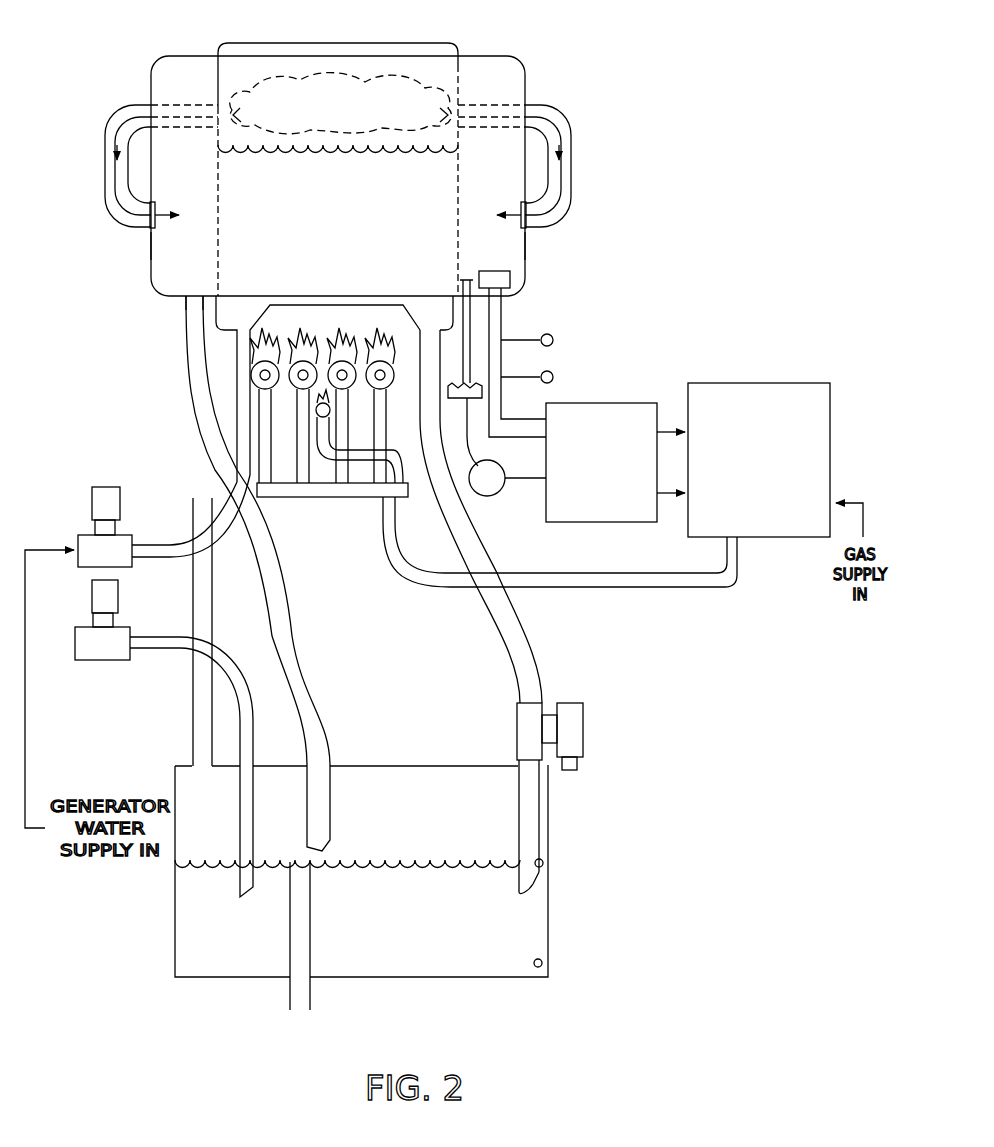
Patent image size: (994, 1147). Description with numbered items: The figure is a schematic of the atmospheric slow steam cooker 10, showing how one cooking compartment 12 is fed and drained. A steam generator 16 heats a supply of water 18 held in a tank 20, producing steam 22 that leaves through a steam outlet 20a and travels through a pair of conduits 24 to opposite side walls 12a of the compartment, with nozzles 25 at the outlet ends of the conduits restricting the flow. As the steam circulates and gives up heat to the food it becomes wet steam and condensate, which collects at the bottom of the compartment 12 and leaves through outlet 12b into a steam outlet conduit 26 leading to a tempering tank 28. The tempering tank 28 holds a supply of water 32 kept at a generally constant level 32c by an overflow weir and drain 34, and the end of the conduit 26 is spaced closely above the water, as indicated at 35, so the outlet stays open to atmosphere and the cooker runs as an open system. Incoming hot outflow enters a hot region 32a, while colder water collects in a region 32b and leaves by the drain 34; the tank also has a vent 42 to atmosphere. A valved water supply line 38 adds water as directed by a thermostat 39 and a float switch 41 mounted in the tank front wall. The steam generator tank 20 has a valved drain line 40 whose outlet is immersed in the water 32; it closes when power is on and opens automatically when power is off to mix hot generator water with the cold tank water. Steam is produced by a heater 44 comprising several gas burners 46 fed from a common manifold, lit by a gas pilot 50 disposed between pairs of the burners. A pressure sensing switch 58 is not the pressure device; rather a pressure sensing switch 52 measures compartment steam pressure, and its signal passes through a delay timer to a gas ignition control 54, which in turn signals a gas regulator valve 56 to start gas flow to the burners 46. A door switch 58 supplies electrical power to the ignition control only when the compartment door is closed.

The slow steam cooker 10 is at (646, 172).
The cooking compartment 12 is at (516, 55).
The side walls 12a is at (151, 236).
The outlet 12b is at (191, 291).
The steam generator 16 is at (568, 108).
The supply of water 18 is at (350, 232).
The tank 20 is at (434, 43).
The steam outlet 20a is at (219, 107).
The steam 22 is at (383, 117).
The conduits 24 is at (130, 105).
The nozzles 25 is at (156, 204).
The steam outlet conduit 26 is at (291, 636).
The tempering tank 28 is at (549, 893).
The supply of water 32 is at (437, 920).
The hot region 32a is at (322, 962).
The region 32b is at (222, 915).
The level 32c is at (466, 859).
The overflow weir and drain 34 is at (290, 946).
The spacing 35 is at (335, 852).
The valved water supply line 38 is at (157, 650).
The thermostat 39 is at (544, 964).
The valved drain line 40 is at (539, 648).
The float switch 41 is at (544, 863).
The vent 42 is at (193, 580).
The heater 44 is at (614, 377).
The gas burners 46 is at (247, 394).
The gas pilot 50 is at (318, 424).
The pressure sensing switch 52 is at (447, 392).
The gas ignition control 54 is at (589, 512).
The gas regulator valve 56 is at (759, 386).
The door switch 58 is at (512, 280).